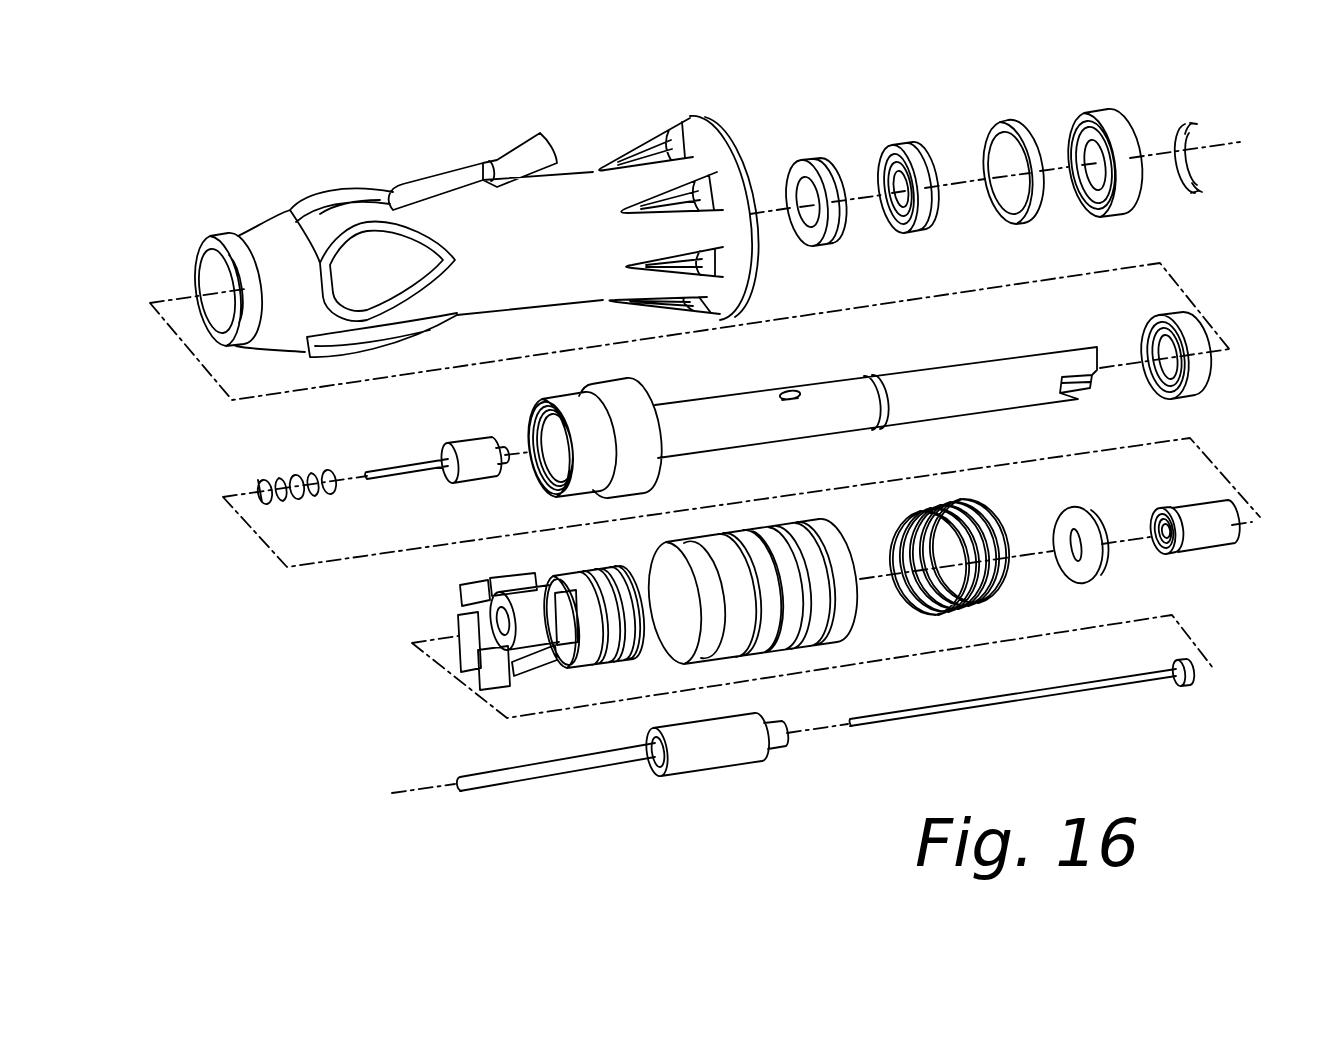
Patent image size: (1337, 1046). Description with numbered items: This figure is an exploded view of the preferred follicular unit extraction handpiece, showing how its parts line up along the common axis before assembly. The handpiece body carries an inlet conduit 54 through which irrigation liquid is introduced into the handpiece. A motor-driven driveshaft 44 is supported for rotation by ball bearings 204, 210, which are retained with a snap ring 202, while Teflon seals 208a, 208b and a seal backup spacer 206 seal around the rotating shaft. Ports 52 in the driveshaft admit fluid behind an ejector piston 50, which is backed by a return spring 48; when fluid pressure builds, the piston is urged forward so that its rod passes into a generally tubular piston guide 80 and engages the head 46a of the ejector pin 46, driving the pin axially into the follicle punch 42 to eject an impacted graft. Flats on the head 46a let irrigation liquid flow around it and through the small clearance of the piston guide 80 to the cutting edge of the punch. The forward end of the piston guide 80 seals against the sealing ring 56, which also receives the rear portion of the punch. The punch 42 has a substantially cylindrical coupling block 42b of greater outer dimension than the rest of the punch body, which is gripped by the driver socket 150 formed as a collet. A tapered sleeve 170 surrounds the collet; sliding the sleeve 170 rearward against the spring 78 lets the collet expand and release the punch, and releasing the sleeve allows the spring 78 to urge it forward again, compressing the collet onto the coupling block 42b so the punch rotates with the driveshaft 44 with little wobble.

The inlet conduit 54 is at (530, 157).
The Teflon seal 208b is at (815, 160).
The Teflon seal 208a is at (905, 145).
The seal backup spacer 206 is at (1013, 120).
The ball bearing 204 is at (1110, 107).
The snap ring 202 is at (1187, 122).
The driveshaft 44 is at (726, 408).
The ports 52 is at (786, 394).
The ejector piston 50 is at (466, 450).
The return spring 48 is at (282, 478).
The ball bearing 210 is at (1189, 393).
The spring 78 is at (990, 512).
The sealing ring 56 is at (1077, 510).
The piston guide 80 is at (1217, 535).
The sleeve 170 is at (692, 548).
The driver socket 150 is at (468, 600).
The follicle punch 42 is at (553, 770).
The coupling block 42b is at (717, 757).
The ejector pin 46 is at (1053, 698).
The head 46a is at (1190, 680).